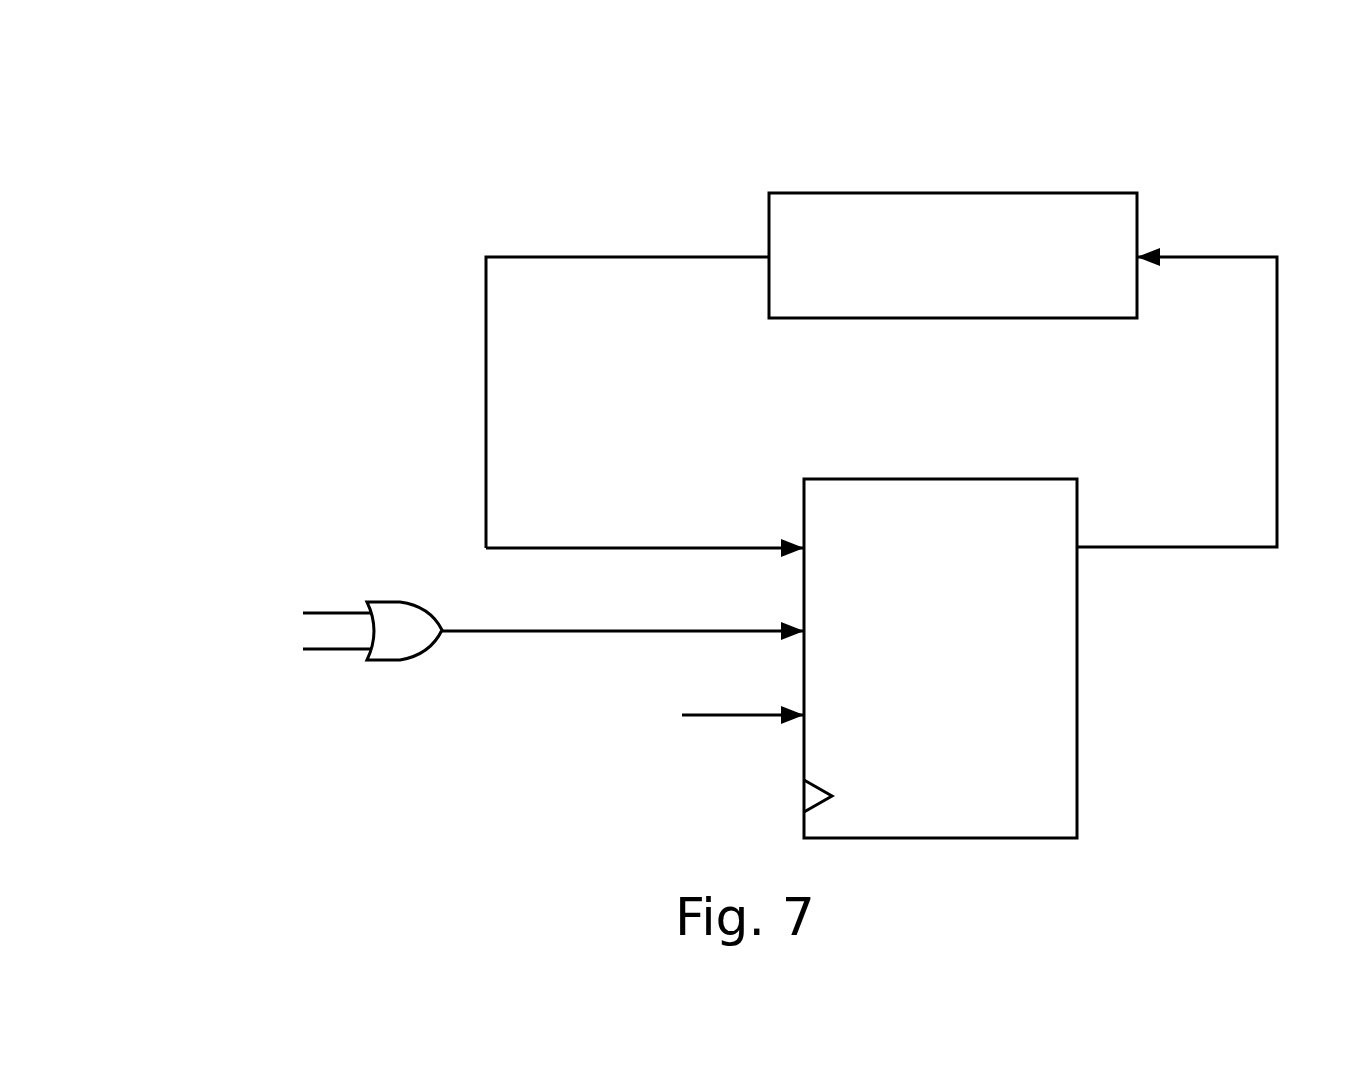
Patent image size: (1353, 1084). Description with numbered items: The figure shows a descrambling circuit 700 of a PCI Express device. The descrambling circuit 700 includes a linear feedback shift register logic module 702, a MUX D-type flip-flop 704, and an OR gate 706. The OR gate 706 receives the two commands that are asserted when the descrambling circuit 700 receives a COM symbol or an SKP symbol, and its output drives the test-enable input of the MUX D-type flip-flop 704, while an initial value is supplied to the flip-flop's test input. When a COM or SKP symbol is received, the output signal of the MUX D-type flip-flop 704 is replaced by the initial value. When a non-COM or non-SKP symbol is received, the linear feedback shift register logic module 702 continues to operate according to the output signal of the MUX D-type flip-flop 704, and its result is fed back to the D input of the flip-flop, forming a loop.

The descrambling circuit 700 is at (324, 118).
The linear feedback shift register logic module 702 is at (1113, 193).
The MUX D-type flip-flop 704 is at (1050, 479).
The OR gate 706 is at (432, 601).